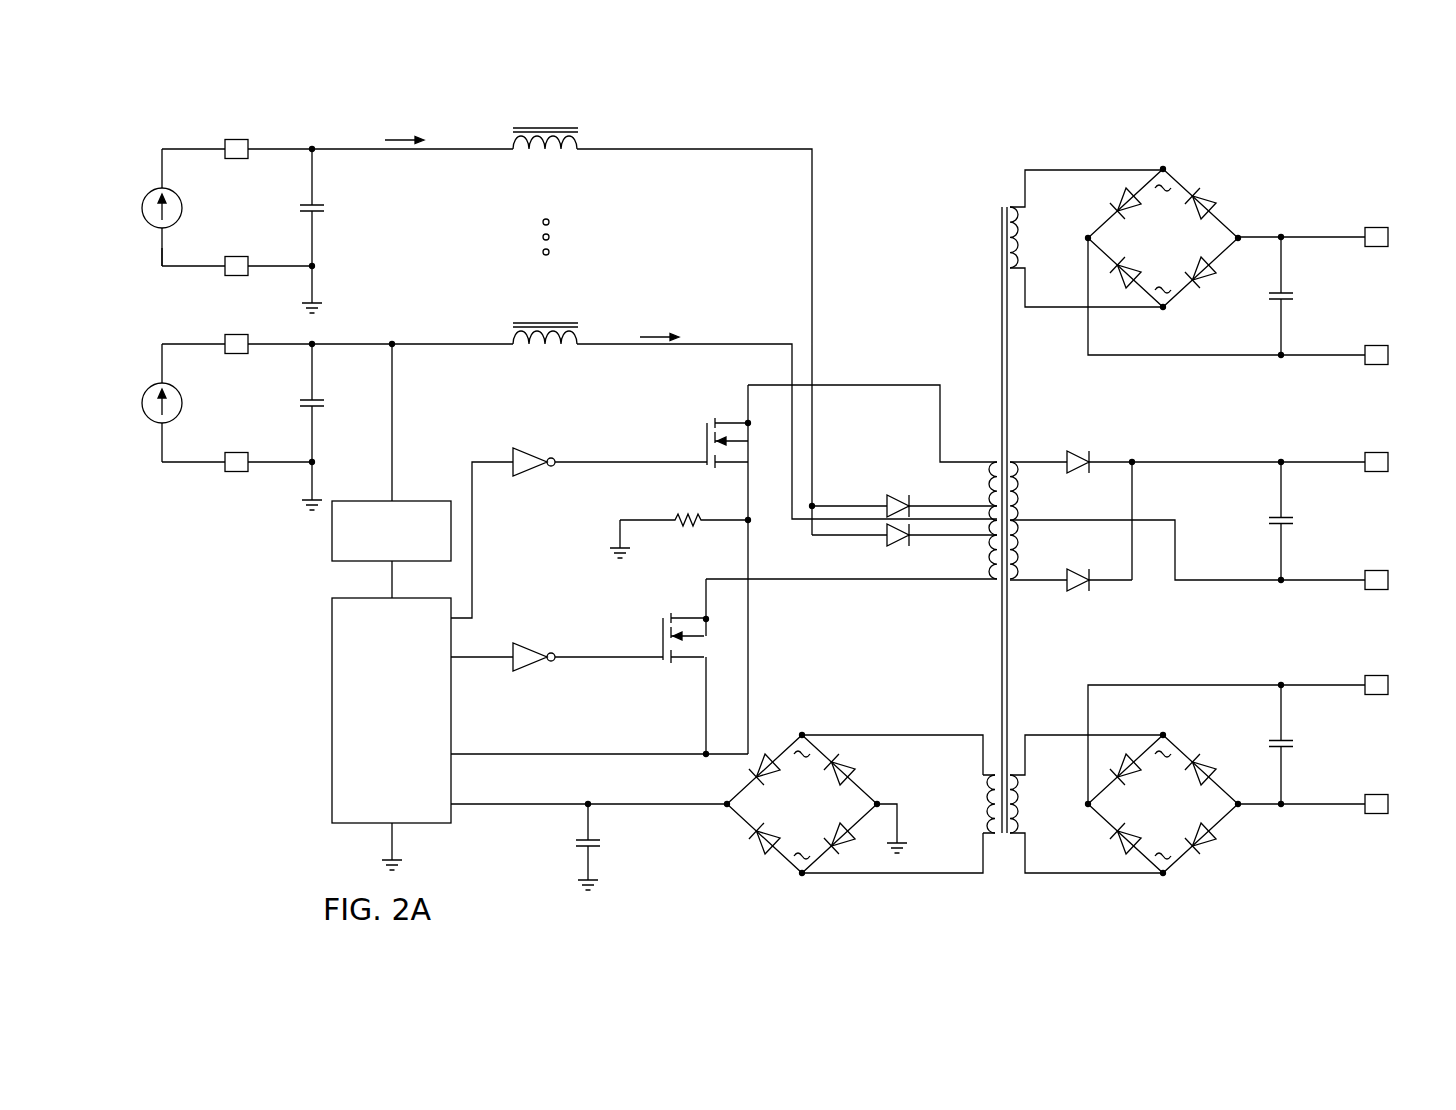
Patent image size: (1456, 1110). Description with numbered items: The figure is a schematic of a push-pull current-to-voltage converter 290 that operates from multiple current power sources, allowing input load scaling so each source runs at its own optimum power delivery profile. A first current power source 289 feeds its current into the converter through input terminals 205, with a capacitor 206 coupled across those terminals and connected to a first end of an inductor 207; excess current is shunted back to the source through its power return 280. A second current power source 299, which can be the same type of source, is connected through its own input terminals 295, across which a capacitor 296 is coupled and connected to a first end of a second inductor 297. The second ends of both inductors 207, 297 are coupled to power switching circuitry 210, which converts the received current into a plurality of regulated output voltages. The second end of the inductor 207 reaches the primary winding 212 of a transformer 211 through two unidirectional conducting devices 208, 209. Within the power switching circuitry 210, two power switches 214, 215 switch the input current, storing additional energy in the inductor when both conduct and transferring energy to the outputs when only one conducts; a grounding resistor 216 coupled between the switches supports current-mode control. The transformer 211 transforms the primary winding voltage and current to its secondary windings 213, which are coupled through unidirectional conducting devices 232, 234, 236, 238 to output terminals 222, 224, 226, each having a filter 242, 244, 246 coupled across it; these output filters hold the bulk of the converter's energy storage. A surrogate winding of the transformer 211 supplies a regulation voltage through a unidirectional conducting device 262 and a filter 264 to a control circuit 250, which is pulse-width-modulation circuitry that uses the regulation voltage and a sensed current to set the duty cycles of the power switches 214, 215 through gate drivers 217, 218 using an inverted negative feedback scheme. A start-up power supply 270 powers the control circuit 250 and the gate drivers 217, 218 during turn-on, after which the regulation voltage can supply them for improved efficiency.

The input terminals 205 is at (146, 164).
The current power source 289 is at (143, 200).
The power return 280 is at (162, 250).
The capacitor 206 is at (300, 207).
The input terminals 295 is at (146, 359).
The current power source 299 is at (143, 396).
The capacitor 296 is at (300, 403).
The inductor 207 is at (523, 130).
The inductor 297 is at (548, 326).
The power switching circuitry 210 is at (754, 304).
The primary winding 212 is at (874, 386).
The secondary windings 213 is at (995, 168).
The unidirectional conducting device 208 is at (896, 496).
The unidirectional conducting device 209 is at (890, 545).
The power switch 214 is at (704, 436).
The power switch 215 is at (660, 631).
The grounding resistor 216 is at (688, 530).
The gate driver 217 is at (535, 472).
The gate driver 218 is at (535, 667).
The start-up power supply 270 is at (332, 531).
The control circuit 250 is at (332, 710).
The current-to-voltage converter 290 is at (212, 704).
The filter 264 is at (576, 843).
The unidirectional conducting device 262 is at (892, 875).
The transformer 211 is at (1000, 870).
The unidirectional conducting device 232 is at (1248, 210).
The filter 242 is at (1268, 296).
The output terminal 222 is at (1405, 208).
The unidirectional conducting device 234 is at (1080, 480).
The unidirectional conducting device 236 is at (1080, 598).
The filter 244 is at (1268, 520).
The output terminal 224 is at (1400, 598).
The filter 246 is at (1268, 745).
The unidirectional conducting device 238 is at (1246, 841).
The output terminal 226 is at (1400, 830).